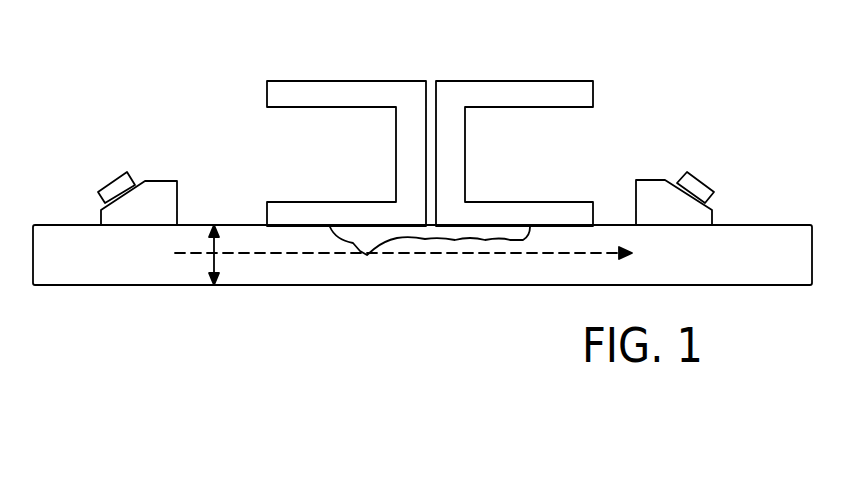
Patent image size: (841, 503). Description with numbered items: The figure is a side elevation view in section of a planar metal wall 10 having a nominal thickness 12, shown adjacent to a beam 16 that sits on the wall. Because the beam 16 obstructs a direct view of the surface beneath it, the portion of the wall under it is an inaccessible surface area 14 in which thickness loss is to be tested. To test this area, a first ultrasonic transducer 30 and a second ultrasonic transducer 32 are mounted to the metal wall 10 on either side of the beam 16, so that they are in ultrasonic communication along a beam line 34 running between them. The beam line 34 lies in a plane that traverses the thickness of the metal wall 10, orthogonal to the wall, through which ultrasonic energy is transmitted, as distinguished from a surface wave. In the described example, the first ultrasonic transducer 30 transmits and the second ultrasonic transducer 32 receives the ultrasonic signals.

The metal wall 10 is at (330, 272).
The nominal thickness 12 is at (214, 285).
The inaccessible surface area 14 is at (545, 227).
The beam 16 is at (337, 98).
The first ultrasonic transducer 30 is at (158, 178).
The second ultrasonic transducer 32 is at (665, 185).
The beam line 34 is at (245, 253).